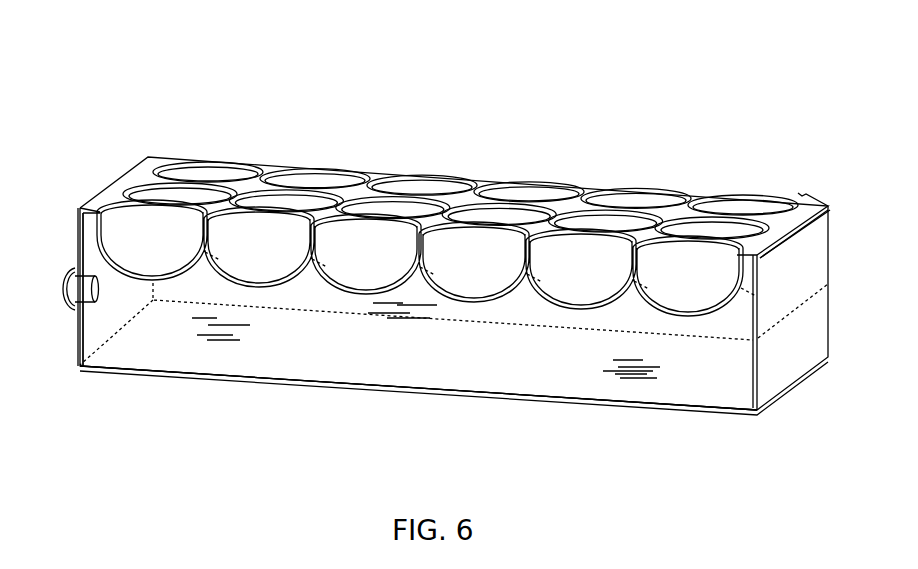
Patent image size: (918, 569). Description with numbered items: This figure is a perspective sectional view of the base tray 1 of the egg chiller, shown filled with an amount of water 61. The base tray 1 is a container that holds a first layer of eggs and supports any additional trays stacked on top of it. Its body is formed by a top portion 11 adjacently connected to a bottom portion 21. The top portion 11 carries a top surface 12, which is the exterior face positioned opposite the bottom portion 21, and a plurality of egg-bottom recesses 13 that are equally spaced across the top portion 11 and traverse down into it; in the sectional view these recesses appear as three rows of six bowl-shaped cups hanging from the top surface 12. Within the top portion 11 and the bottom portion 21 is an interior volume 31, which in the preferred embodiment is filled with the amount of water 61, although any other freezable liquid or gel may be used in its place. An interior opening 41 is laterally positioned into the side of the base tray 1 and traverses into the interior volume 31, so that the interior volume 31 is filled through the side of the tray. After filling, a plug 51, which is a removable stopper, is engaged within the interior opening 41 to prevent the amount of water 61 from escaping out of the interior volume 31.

The base tray 1 is at (448, 100).
The top portion 11 is at (794, 244).
The top surface 12 is at (267, 163).
The plurality of egg-bottom recesses 13 is at (426, 258).
The bottom portion 21 is at (793, 322).
The interior volume 31 is at (425, 342).
The interior opening 41 is at (87, 313).
The plug 51 is at (73, 272).
The amount of water 61 is at (177, 360).